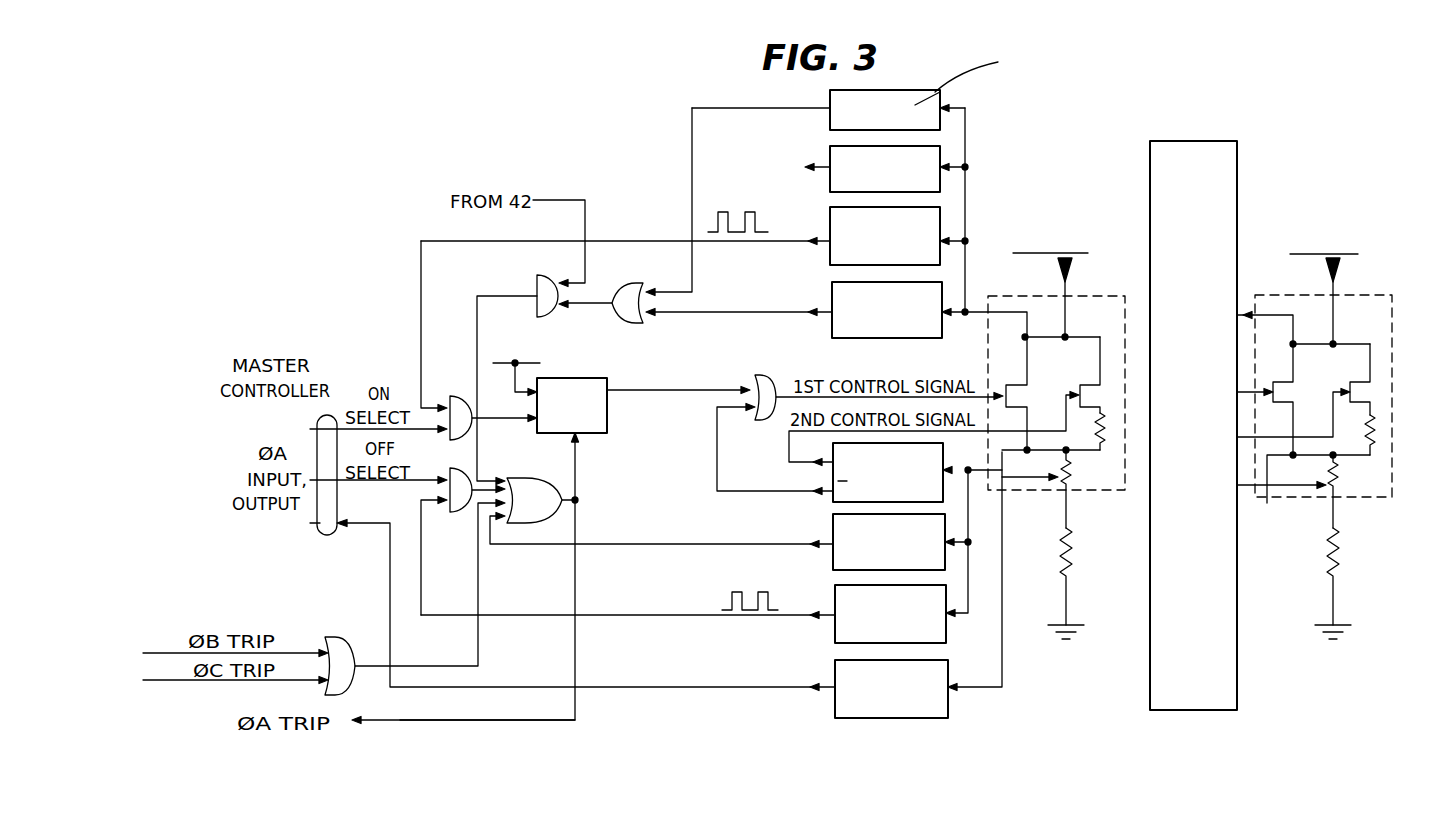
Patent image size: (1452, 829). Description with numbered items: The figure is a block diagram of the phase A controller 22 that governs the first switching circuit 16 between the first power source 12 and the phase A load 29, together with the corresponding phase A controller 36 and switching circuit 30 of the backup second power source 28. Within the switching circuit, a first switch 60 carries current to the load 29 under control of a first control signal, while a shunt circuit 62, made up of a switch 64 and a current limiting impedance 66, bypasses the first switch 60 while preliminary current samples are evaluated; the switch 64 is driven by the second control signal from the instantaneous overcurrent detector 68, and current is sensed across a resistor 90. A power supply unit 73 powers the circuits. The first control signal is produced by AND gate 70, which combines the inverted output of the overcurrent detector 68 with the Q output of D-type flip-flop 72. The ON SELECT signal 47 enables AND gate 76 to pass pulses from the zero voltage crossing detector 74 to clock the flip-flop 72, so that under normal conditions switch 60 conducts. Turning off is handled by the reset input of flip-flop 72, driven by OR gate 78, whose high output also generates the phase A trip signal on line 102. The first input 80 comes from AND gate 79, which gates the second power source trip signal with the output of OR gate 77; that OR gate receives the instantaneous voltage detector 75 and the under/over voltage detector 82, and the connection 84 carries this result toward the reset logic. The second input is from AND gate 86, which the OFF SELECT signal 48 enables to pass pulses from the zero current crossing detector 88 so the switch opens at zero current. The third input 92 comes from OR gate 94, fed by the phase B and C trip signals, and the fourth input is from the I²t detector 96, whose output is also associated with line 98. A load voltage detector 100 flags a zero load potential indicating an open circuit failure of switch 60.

The phase A controller 22 is at (543, 158).
The instantaneous voltage detector 75 is at (830, 100).
The power supply unit 73 is at (830, 157).
The zero voltage crossing detector 74 is at (830, 222).
The first switching circuit 16 is at (1002, 278).
The first primary three phase power source 12 is at (1023, 220).
The shunt circuit 62 is at (1115, 352).
The phase A controller of second power source 36 is at (1186, 133).
The second backup power source 28 is at (1358, 238).
The switching circuit of second power source 30 is at (1382, 284).
The ON SELECT signal 47 is at (425, 426).
The OFF SELECT signal 48 is at (411, 484).
The AND gate 76 is at (452, 398).
The AND gate 86 is at (456, 513).
The D-type flip-flop 72 is at (598, 434).
The OR gate 78 is at (526, 523).
The first input 80 is at (495, 293).
The line to reset OR gate 84 is at (475, 478).
The AND gate 79 is at (548, 281).
The OR gate 77 is at (622, 316).
The AND gate 70 is at (758, 377).
The under/over voltage detector 82 is at (832, 292).
The instantaneous overcurrent detector 68 is at (833, 499).
The I*I*T detector 98 is at (833, 556).
The zero current crossing detector 88 is at (835, 629).
The load voltage detector 100 is at (845, 712).
The I²t detector 96 is at (693, 544).
The first switch 60 is at (1019, 394).
The switch 64 is at (1098, 395).
The current limiting impedance 66 is at (1105, 432).
The resistor 90 is at (1072, 470).
The phase A load 29 is at (1070, 556).
The OR gate 94 is at (372, 633).
The third input 92 is at (480, 646).
The phase A trip signal line 102 is at (490, 722).